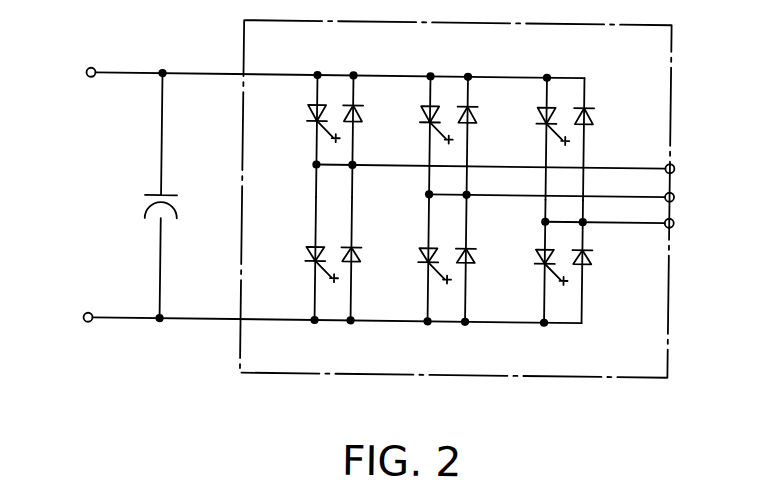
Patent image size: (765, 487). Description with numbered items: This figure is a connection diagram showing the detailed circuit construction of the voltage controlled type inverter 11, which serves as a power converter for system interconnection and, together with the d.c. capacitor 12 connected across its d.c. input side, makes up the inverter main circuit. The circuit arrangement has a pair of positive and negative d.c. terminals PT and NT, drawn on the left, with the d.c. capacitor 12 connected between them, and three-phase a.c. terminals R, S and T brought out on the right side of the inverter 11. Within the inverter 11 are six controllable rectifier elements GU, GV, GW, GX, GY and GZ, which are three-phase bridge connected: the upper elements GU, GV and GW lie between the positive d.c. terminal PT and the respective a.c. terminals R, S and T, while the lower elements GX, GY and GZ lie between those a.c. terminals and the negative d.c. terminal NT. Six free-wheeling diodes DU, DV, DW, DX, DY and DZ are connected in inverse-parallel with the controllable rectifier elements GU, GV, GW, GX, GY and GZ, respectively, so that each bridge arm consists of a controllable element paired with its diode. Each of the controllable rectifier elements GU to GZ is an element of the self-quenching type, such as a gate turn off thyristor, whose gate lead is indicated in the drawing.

The voltage controlled type inverter 11 is at (670, 58).
The d.c. capacitor 12 is at (178, 198).
The positive d.c. terminal PT is at (314, 74).
The negative d.c. terminal NT is at (311, 320).
The controllable rectifier element GU is at (307, 122).
The controllable rectifier element GV is at (420, 122).
The controllable rectifier element GW is at (537, 122).
The controllable rectifier element GX is at (307, 262).
The controllable rectifier element GY is at (420, 262).
The controllable rectifier element GZ is at (537, 262).
The free-wheeling diode DU is at (359, 116).
The free-wheeling diode DV is at (474, 116).
The free-wheeling diode DW is at (590, 116).
The free-wheeling diode DX is at (359, 256).
The free-wheeling diode DY is at (474, 256).
The free-wheeling diode DZ is at (590, 256).
The three-phase a.c. terminal R is at (506, 163).
The three-phase a.c. terminal S is at (562, 194).
The three-phase a.c. terminal T is at (620, 222).